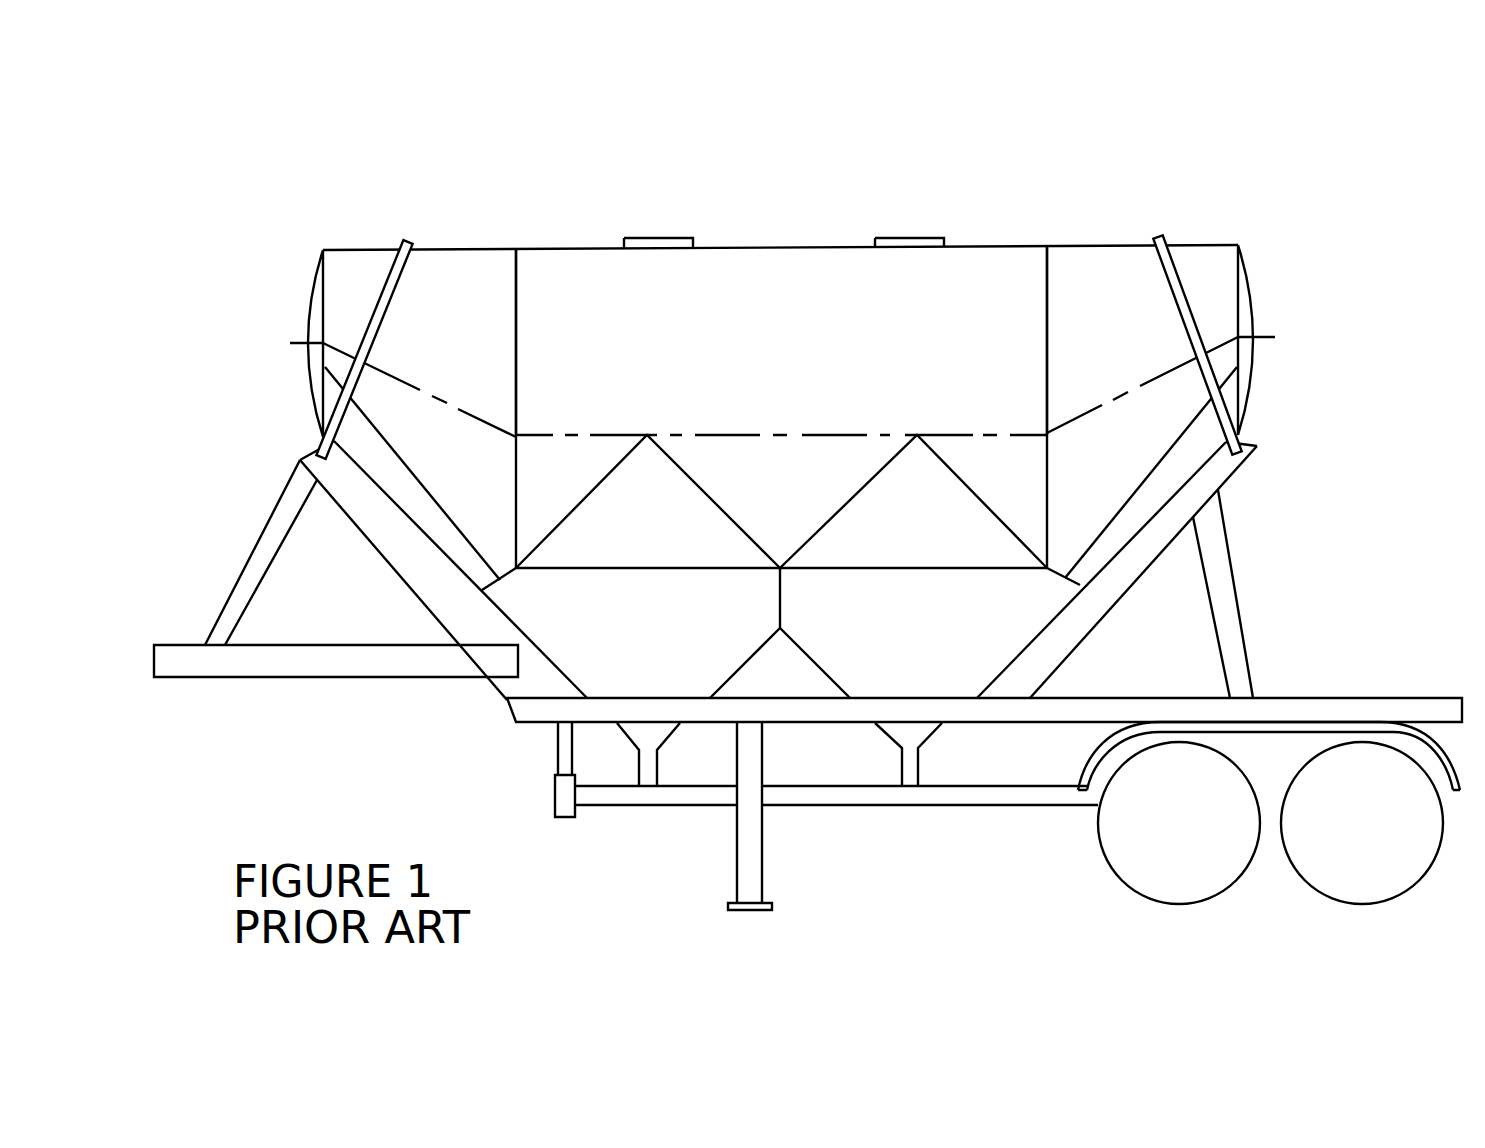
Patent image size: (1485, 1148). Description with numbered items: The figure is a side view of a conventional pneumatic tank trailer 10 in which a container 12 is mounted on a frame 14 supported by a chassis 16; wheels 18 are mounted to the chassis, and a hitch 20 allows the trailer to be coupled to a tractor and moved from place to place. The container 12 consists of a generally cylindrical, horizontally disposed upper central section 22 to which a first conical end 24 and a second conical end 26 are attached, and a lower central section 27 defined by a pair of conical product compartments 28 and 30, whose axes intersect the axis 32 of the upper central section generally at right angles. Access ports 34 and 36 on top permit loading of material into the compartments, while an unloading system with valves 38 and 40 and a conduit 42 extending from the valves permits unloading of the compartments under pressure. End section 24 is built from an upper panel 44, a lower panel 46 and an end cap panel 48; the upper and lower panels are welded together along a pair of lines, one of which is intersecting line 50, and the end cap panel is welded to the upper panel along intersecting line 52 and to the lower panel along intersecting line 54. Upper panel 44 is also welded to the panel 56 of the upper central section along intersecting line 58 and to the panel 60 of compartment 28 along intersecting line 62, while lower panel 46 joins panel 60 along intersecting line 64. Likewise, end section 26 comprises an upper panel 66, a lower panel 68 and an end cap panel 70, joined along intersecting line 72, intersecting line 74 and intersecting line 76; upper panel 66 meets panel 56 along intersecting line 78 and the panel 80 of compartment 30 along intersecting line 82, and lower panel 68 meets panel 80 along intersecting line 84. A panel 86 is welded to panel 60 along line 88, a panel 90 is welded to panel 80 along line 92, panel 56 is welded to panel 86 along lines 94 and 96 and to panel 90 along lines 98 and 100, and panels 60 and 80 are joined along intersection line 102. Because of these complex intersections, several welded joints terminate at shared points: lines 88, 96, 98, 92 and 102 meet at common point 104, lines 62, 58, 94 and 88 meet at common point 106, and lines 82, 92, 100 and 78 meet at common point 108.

The pneumatic tank trailer 10 is at (938, 162).
The container 12 is at (1082, 240).
The frame 14 is at (1112, 598).
The chassis 16 is at (1090, 705).
The wheels 18 is at (1140, 850).
The hitch 20 is at (187, 663).
The upper central section 22 is at (594, 243).
The first conical end 24 is at (376, 272).
The second conical end 26 is at (1220, 268).
The lower central section 27 is at (820, 676).
The conical product compartment 28 is at (548, 668).
The conical product compartment 30 is at (1025, 658).
The axis 32 is at (784, 432).
The access port 34 is at (668, 238).
The access port 36 is at (923, 238).
The valve 38 is at (651, 777).
The valve 40 is at (916, 777).
The conduit 42 is at (797, 795).
The upper panel 44 is at (451, 351).
The lower panel 46 is at (368, 466).
The end cap panel 48 is at (320, 345).
The intersecting line 50 is at (421, 463).
The intersecting line 52 is at (323, 290).
The intersecting line 54 is at (321, 387).
The panel 56 is at (712, 338).
The intersecting line 58 is at (522, 355).
The panel 60 is at (646, 625).
The intersecting line 62 is at (507, 570).
The intersecting line 64 is at (500, 594).
The upper panel 66 is at (1104, 338).
The lower panel 68 is at (1193, 460).
The end cap panel 70 is at (1252, 318).
The intersecting line 72 is at (1143, 476).
The intersecting line 74 is at (1250, 290).
The intersecting line 76 is at (1248, 383).
The intersecting line 78 is at (1040, 335).
The panel 80 is at (911, 631).
The intersecting line 82 is at (1062, 560).
The intersecting line 84 is at (1064, 588).
The panel 86 is at (636, 506).
The line 88 is at (653, 564).
The panel 90 is at (902, 500).
The line 92 is at (933, 564).
The line 94 is at (606, 471).
The line 96 is at (686, 469).
The line 98 is at (877, 469).
The line 100 is at (957, 471).
The intersection line 102 is at (786, 592).
The common point 104 is at (781, 562).
The common point 106 is at (521, 560).
The common point 108 is at (1043, 560).